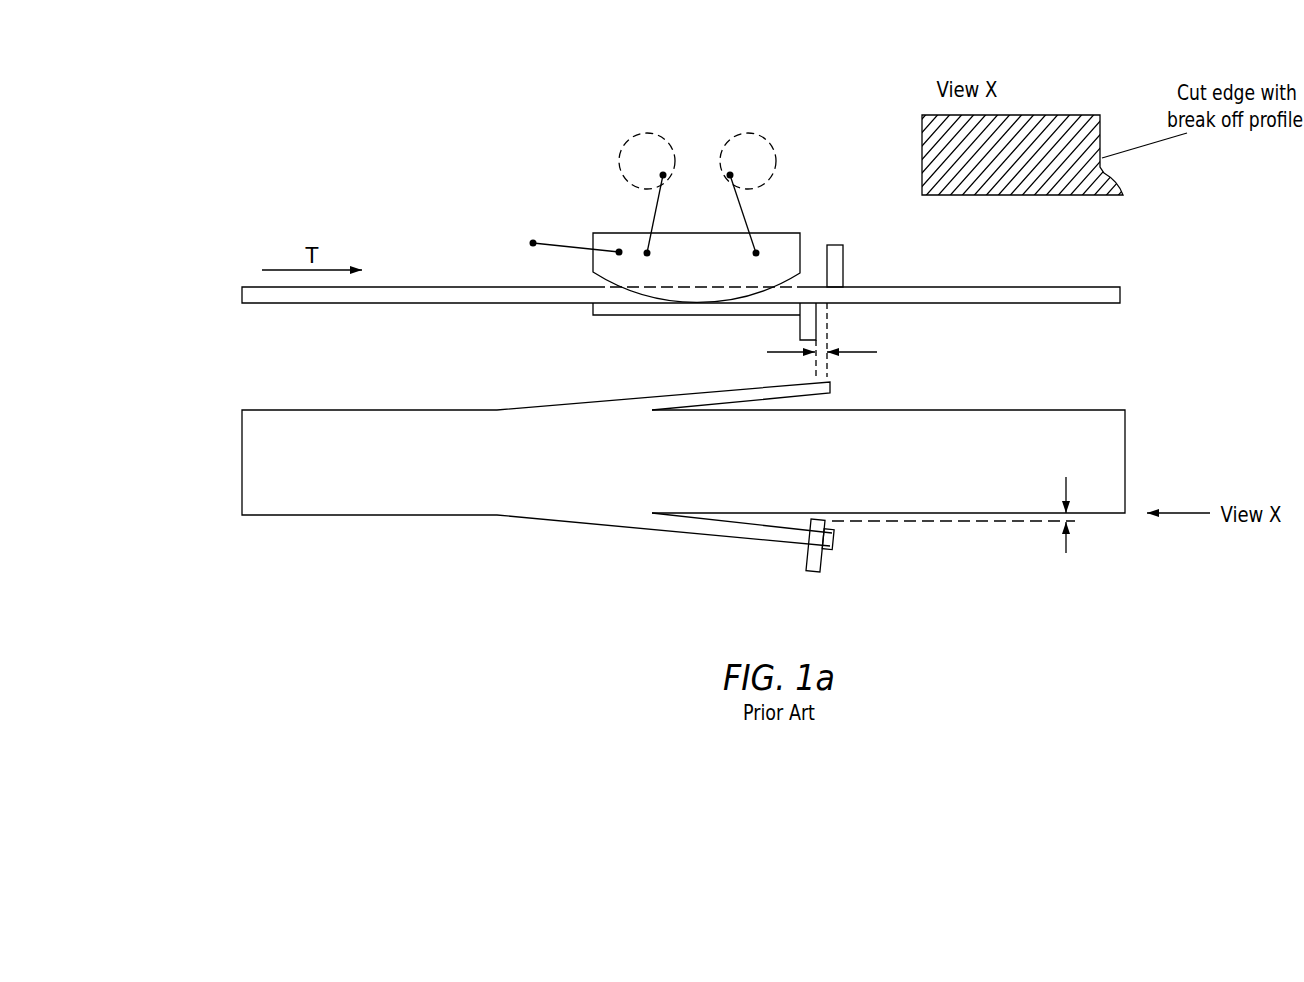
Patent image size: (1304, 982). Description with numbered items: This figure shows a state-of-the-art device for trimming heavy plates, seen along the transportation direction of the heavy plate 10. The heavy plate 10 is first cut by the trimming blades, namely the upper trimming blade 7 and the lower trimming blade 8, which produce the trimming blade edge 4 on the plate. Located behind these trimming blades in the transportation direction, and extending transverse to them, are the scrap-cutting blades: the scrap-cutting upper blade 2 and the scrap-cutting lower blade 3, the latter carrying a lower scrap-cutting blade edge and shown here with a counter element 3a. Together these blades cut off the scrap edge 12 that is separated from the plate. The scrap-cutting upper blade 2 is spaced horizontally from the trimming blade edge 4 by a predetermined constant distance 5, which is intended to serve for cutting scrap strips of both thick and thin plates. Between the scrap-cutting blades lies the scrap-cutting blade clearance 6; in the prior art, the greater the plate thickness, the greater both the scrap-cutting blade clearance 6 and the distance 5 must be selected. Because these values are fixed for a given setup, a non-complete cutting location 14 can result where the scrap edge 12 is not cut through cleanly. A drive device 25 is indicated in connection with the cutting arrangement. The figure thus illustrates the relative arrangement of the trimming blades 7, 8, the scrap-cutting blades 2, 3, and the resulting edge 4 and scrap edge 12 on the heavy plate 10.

The scrap-cutting upper blade 2 is at (831, 245).
The scrap-cutting lower blade 3 is at (800, 329).
The counter blade 3a is at (833, 537).
The trimming blade edge 4 is at (968, 410).
The distance between the scrap-cutting upper blade and the trimming blade edge 5 is at (1065, 531).
The scrap-cutting blade clearance 6 is at (811, 353).
The upper trimming blade 7 is at (665, 237).
The lower trimming blade 8 is at (652, 316).
The heavy plate 10 is at (1020, 293).
The scrap edge 12 is at (826, 385).
The non-complete cutting location 14 is at (642, 150).
The drive device 25 is at (697, 133).